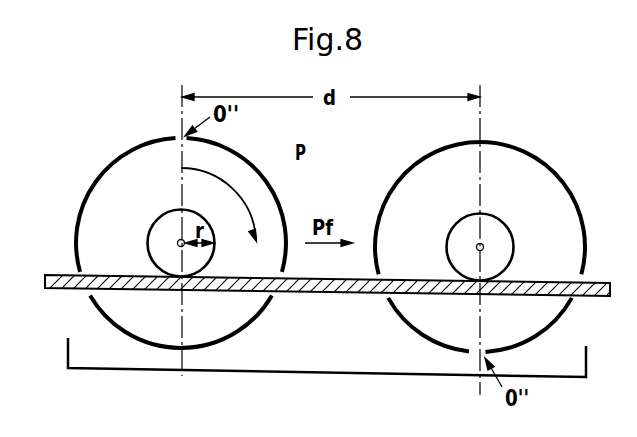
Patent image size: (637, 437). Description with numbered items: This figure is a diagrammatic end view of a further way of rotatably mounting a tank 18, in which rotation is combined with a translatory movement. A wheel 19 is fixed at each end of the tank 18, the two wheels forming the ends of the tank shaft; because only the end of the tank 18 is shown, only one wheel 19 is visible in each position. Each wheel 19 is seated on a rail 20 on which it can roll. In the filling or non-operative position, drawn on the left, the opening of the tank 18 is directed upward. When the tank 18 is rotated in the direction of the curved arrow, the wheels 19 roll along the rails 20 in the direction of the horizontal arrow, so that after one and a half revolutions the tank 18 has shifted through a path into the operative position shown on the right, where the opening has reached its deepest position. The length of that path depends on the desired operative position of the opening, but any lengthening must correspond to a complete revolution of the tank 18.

The tank 18 is at (108, 137).
The wheel 19 is at (155, 237).
The rail 20 is at (66, 297).